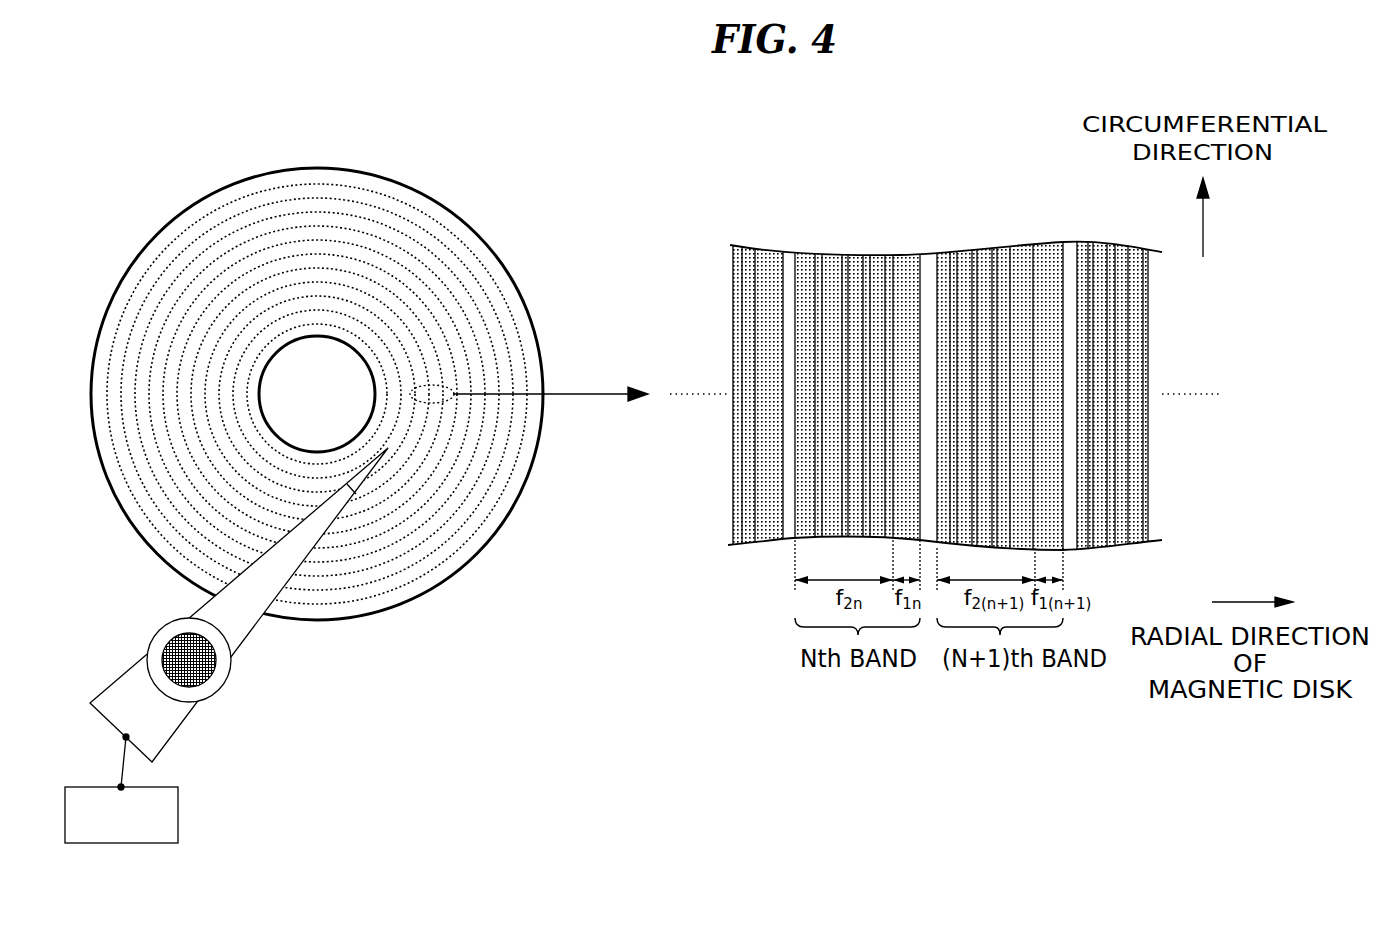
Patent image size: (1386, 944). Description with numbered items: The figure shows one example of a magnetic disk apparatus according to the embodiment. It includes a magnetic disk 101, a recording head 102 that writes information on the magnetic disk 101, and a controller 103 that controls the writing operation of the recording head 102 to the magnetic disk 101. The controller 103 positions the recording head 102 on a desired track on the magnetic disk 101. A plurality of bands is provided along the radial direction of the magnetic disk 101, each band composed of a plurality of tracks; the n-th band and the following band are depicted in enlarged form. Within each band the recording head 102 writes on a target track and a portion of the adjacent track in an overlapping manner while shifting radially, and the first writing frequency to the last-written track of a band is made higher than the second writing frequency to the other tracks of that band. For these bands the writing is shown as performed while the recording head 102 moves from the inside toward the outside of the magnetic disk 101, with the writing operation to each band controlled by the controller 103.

The magnetic disk 101 is at (480, 248).
The recording head 102 is at (388, 448).
The controller 103 is at (121, 788).